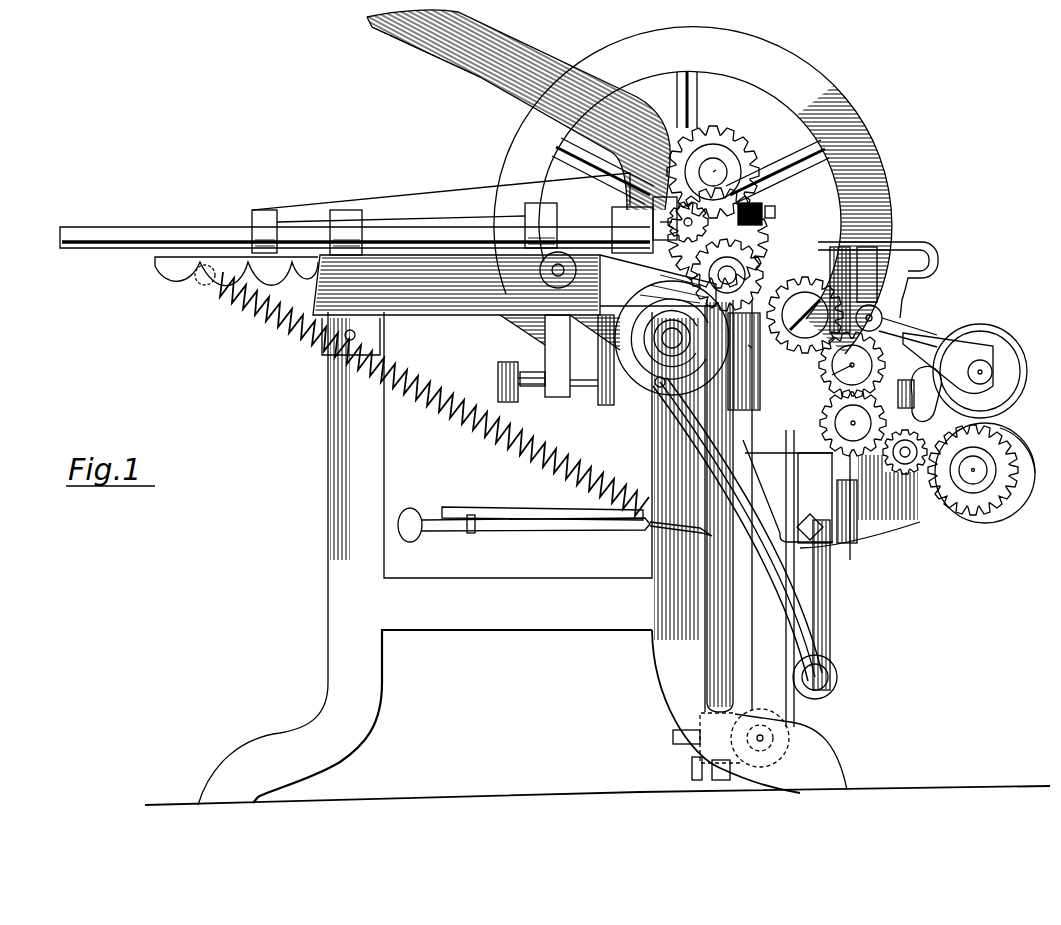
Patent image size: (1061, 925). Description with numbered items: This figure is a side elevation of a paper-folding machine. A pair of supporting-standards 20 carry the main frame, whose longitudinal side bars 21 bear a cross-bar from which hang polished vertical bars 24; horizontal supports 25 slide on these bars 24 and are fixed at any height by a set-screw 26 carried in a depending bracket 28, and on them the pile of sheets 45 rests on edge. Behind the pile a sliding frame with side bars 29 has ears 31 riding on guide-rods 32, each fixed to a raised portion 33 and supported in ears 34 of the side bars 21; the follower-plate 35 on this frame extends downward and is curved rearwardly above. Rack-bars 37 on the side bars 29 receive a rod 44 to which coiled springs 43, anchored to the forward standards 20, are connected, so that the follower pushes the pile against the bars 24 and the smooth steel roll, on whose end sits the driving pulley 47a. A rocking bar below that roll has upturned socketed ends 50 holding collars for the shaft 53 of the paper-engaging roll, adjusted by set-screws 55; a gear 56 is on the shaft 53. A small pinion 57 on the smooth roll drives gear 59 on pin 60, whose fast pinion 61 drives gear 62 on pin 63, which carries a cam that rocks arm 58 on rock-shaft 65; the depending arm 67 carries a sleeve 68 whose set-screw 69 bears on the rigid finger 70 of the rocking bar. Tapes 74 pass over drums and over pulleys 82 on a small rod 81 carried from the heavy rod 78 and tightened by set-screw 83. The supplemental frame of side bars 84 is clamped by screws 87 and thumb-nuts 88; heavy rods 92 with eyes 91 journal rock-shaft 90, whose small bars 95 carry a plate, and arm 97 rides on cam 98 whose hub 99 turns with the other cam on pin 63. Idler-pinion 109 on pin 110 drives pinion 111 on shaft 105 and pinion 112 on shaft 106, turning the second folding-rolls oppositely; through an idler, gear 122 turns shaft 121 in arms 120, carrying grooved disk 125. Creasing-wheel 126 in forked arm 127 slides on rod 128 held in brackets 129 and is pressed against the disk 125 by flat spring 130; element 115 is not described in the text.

The supporting-standards 20 is at (657, 469).
The side bars 21 is at (460, 300).
The vertical bars 24 is at (692, 769).
The horizontal supports 25 is at (455, 510).
The set-screw 26 is at (550, 533).
The depending bracket 28 is at (468, 533).
The side bars of sliding frame 29 is at (388, 200).
The laterally-extending ears 31 is at (264, 210).
The guide-rods 32 is at (132, 230).
The raised portion 33 is at (614, 212).
The ears 34 is at (345, 222).
The follower-plate 35 is at (465, 70).
The rack-bars 37 is at (199, 256).
The coiled springs 43 is at (275, 322).
The rod 44 is at (200, 288).
The pile of sheets of paper 45 is at (535, 62).
The driving wheel or pulley 47a is at (813, 97).
The upturned ends 50 is at (762, 207).
The shaft 53 is at (716, 170).
The set-screws 55 is at (776, 212).
The gear 56 is at (718, 132).
The small pinion 57 is at (672, 222).
The arm 58 is at (565, 302).
The gear 59 is at (683, 244).
The pin 60 is at (742, 274).
The pinion 61 is at (718, 238).
The gear 62 is at (748, 345).
The pin 63 is at (674, 338).
The rock-shaft 65 is at (540, 271).
The downwardly-depending arm 67 is at (545, 345).
The interiorly-screw-threaded sleeve 68 is at (545, 387).
The set-screw 69 is at (500, 363).
The rigid finger 70 is at (605, 392).
The tapes 74 is at (797, 713).
The heavy rod 78 is at (707, 665).
The small rod 81 is at (768, 757).
The pulleys 82 is at (760, 705).
The set-screw 83 is at (673, 740).
The side bars 84 is at (810, 493).
The screws 87 is at (941, 392).
The thumb-nuts 88 is at (972, 458).
The rock-shaft 90 is at (823, 672).
The eyes 91 is at (840, 677).
The heavy rods 92 is at (830, 606).
The small bars 95 is at (820, 540).
The arm 97 is at (777, 590).
The cam 98 is at (658, 392).
The hub portion 99 is at (893, 461).
The shaft 105 is at (832, 375).
The shaft 106 is at (840, 425).
The idler-pinion 109 is at (800, 290).
The pin 110 is at (798, 352).
The pinion 111 is at (880, 363).
The pinion 112 is at (800, 454).
The gear 115 is at (888, 487).
The outwardly-turned arms 120 is at (930, 524).
The shaft 121 is at (972, 482).
The gear 122 is at (990, 518).
The disk 125 is at (1015, 437).
The creasing-wheel 126 is at (990, 338).
The forked arm 127 is at (930, 336).
The rod 128 is at (882, 318).
The brackets 129 is at (890, 274).
The flat spring 130 is at (898, 245).